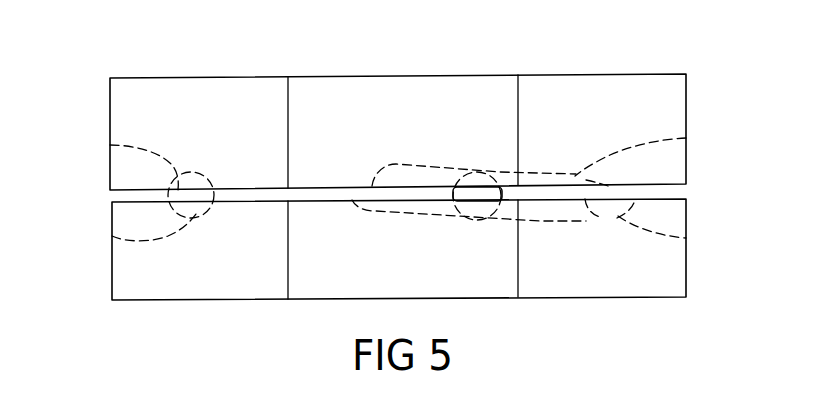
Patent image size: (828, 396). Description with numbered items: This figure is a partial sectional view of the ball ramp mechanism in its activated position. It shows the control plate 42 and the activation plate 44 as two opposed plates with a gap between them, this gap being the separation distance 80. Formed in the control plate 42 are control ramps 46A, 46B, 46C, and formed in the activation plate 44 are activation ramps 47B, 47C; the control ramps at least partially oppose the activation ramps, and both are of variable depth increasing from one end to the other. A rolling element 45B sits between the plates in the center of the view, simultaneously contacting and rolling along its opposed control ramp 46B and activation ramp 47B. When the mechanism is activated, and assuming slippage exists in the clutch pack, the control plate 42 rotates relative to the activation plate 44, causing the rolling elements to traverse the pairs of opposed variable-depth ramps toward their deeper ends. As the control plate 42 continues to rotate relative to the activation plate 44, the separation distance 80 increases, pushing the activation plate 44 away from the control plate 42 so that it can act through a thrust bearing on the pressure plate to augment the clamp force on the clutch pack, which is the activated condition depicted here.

The control plate 42 is at (130, 276).
The activation plate 44 is at (163, 98).
The separation distance 80 is at (90, 191).
The rolling element 45B is at (503, 196).
The control ramp 46A is at (686, 238).
The control ramp 46B is at (383, 212).
The control ramp 46C is at (112, 236).
The activation ramp 47B is at (686, 138).
The activation ramp 47C is at (112, 145).